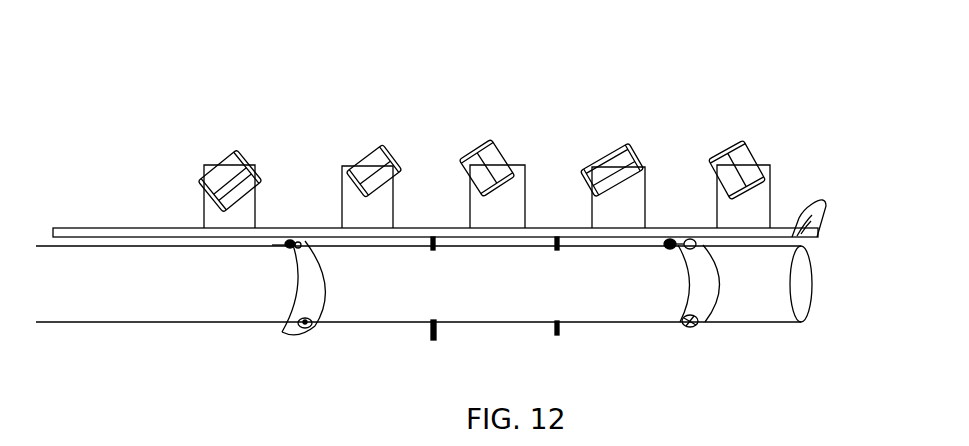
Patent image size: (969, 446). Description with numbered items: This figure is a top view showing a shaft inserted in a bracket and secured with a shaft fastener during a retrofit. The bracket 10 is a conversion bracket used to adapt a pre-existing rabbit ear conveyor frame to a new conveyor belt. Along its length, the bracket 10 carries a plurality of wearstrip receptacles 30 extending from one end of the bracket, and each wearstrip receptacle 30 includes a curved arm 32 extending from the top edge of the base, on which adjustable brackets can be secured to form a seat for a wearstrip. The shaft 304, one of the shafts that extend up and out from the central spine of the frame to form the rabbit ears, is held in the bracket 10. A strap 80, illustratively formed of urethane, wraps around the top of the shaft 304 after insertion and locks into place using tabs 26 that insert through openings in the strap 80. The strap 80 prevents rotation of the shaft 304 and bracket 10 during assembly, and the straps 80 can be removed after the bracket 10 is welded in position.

The bracket 10 is at (430, 338).
The tabs 26 is at (288, 248).
The wearstrip receptacles 30 is at (252, 153).
The curved arm 32 is at (243, 210).
The strap 80 is at (282, 333).
The shafts 304 is at (768, 313).